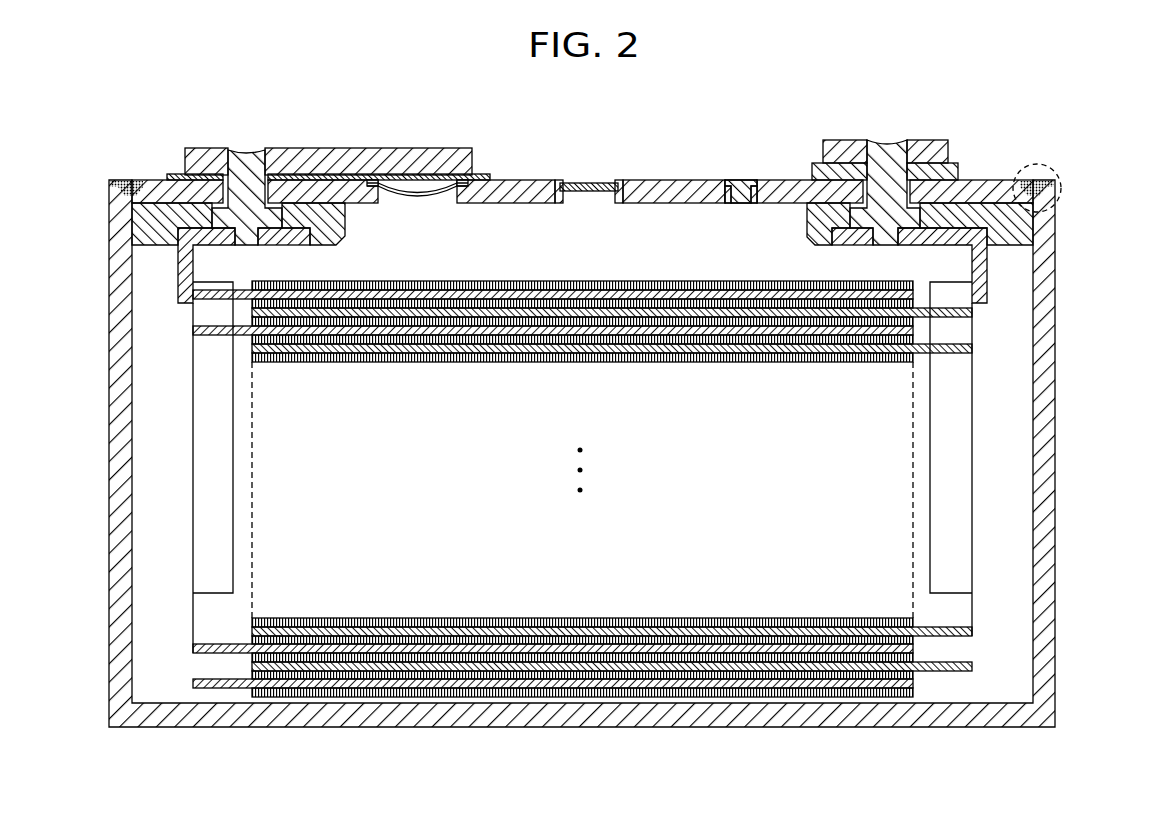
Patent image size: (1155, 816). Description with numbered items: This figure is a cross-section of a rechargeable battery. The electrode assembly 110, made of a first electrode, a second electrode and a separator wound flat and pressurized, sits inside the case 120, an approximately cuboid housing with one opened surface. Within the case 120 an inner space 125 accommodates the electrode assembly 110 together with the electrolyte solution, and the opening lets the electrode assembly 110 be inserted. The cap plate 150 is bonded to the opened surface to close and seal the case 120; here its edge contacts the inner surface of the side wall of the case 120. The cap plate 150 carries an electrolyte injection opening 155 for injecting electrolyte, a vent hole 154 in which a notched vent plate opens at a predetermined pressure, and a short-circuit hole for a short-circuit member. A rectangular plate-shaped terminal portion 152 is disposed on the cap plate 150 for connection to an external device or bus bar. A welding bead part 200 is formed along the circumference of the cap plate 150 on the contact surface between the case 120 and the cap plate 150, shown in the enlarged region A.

The electrode assembly 110 is at (608, 706).
The case 120 is at (1056, 450).
The inner space 125 is at (661, 246).
The cap plate 150 is at (514, 176).
The terminal portion 152 is at (367, 145).
The vent hole 154 is at (589, 181).
The electrolyte injection opening 155 is at (740, 179).
The welding bead part 200 is at (128, 183).